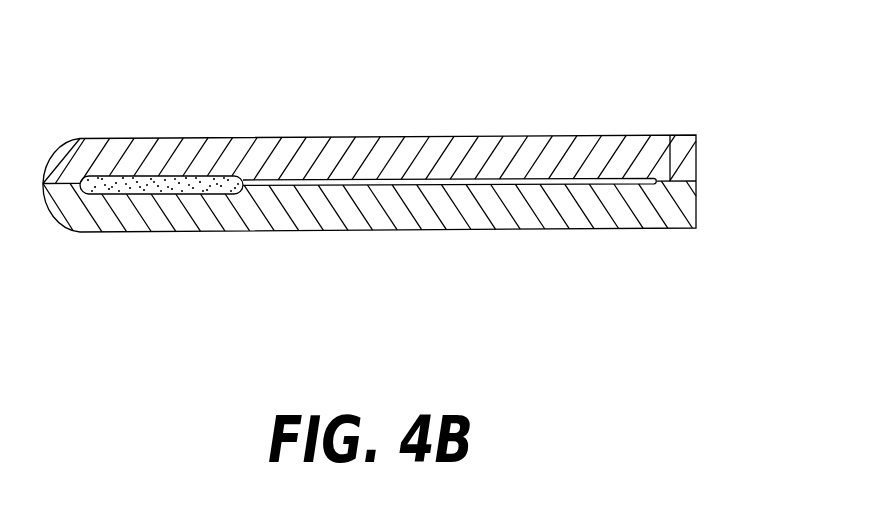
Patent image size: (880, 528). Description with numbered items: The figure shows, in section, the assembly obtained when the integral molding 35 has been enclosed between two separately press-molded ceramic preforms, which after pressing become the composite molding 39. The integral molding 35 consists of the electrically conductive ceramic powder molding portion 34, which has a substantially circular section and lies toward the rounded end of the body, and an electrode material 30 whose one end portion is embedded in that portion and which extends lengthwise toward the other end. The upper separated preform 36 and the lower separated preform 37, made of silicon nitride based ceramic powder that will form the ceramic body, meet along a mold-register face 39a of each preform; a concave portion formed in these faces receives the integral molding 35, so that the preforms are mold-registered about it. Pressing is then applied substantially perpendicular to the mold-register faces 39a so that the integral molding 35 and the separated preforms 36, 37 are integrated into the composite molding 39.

The electrode material 30 is at (477, 178).
The electrically conductive ceramic powder molding portion 34 is at (143, 177).
The integral molding 35 is at (267, 163).
The separated preform 36 is at (375, 158).
The separated preform 37 is at (356, 221).
The composite molding 39 is at (230, 242).
The mold-register face 39a is at (670, 135).